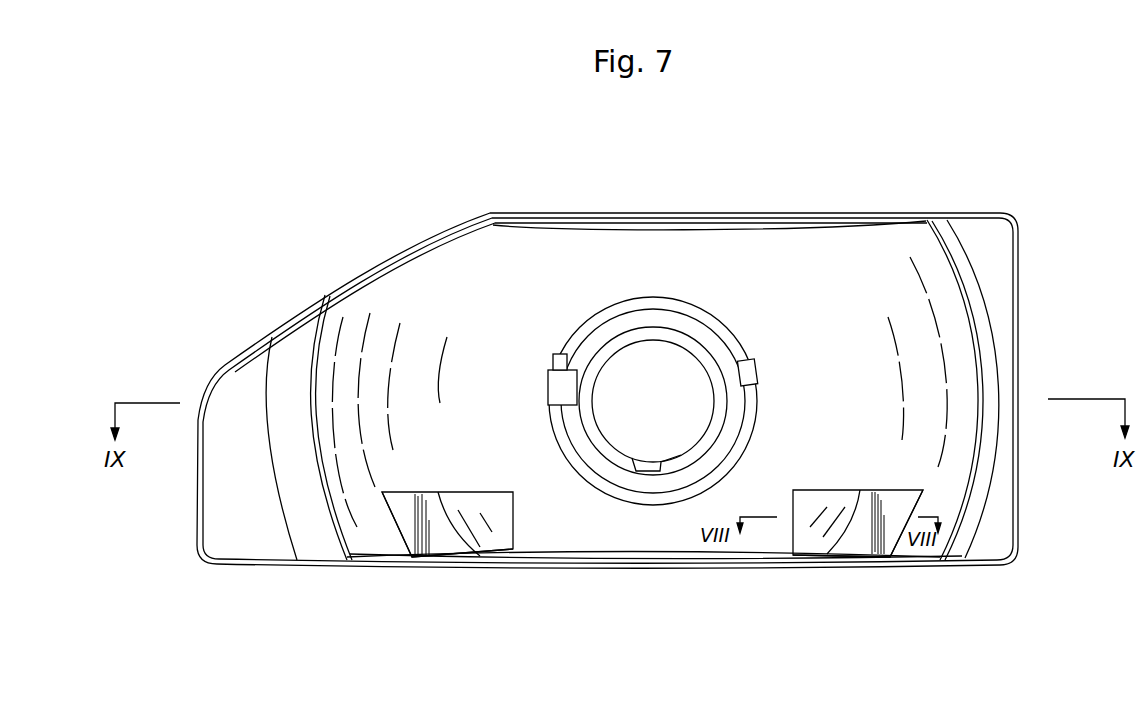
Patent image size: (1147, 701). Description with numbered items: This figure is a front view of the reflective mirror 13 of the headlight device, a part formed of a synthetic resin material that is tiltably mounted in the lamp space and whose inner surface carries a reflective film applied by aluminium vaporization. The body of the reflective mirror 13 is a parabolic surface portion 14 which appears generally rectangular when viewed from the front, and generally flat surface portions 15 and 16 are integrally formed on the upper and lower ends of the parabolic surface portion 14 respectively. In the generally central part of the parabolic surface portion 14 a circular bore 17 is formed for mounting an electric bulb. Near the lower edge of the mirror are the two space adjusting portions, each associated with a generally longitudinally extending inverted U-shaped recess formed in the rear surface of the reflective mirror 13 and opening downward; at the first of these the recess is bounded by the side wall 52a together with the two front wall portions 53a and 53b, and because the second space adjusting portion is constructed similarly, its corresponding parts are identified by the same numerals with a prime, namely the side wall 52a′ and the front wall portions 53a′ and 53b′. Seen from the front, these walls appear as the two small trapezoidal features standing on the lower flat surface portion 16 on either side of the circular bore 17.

The reflective mirror 13 is at (1072, 142).
The parabolic surface portion 14 is at (930, 357).
The flat surface portion 15 is at (687, 228).
The flat surface portion 16 is at (659, 546).
The circular bore 17 is at (608, 360).
The side wall 52a is at (860, 490).
The side wall 52a′ is at (440, 492).
The front wall portion 53a is at (813, 510).
The front wall portion 53a′ is at (478, 508).
The front wall portion 53b is at (860, 547).
The front wall portion 53b′ is at (403, 516).